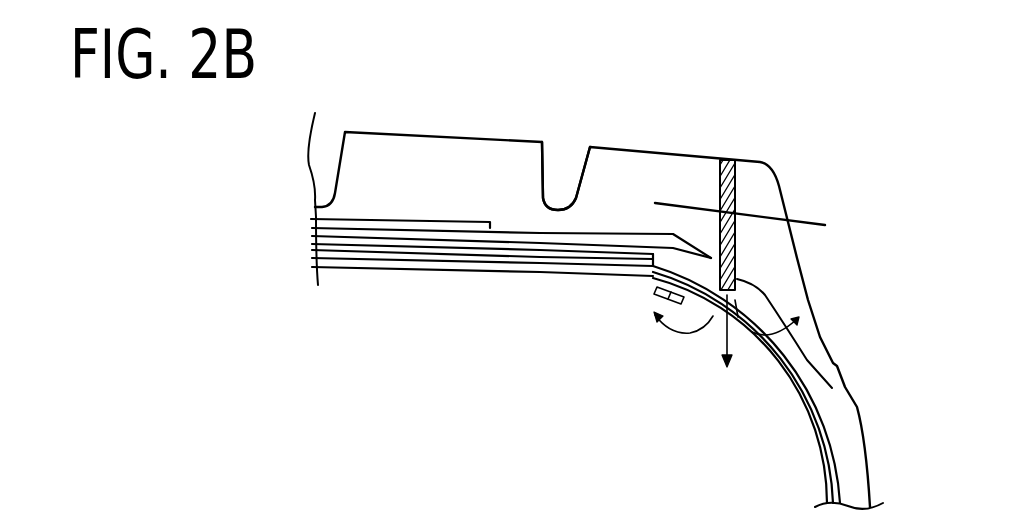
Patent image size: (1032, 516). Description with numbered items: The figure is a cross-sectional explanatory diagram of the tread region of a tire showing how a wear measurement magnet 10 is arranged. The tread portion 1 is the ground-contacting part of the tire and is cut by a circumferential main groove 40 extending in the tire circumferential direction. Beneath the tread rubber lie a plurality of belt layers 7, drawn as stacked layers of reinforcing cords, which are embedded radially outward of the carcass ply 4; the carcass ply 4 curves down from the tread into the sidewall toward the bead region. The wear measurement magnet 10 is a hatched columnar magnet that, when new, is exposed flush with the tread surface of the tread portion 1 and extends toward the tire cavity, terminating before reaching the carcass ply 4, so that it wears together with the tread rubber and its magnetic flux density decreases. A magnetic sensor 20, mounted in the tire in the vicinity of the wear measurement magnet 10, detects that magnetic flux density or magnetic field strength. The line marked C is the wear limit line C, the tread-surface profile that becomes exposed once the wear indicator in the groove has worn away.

The tread portion 1 is at (628, 166).
The carcass ply 4 is at (790, 365).
The belt layers 7 is at (470, 235).
The wear measurement magnet 10 is at (728, 160).
The magnetic sensor 20 is at (657, 292).
The circumferential main groove 40 is at (325, 150).
The wear limit line C is at (811, 223).